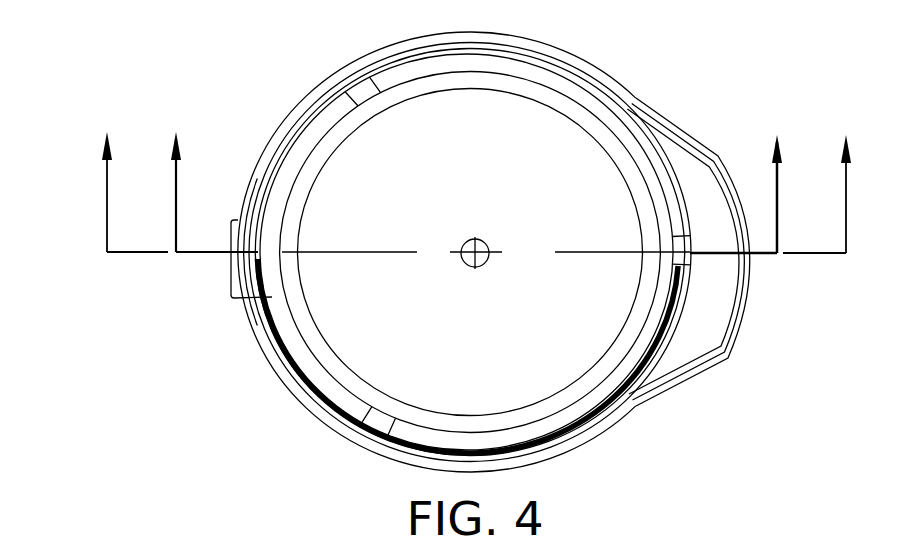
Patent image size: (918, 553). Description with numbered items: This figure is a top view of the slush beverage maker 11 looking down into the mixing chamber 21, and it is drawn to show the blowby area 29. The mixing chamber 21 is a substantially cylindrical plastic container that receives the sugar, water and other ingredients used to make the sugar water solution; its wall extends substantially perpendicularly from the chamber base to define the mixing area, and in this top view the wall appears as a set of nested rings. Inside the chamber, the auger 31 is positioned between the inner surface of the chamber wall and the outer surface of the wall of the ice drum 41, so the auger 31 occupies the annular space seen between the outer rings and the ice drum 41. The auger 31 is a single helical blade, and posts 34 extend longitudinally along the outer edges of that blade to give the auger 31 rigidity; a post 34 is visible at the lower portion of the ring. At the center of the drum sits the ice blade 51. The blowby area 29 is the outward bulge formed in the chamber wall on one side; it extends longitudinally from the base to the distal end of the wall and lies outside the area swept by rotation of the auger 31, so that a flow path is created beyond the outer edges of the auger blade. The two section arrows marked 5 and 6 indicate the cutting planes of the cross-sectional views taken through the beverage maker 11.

The section line 5- 5 is at (475, 192).
The section line 6- 6 is at (474, 192).
The slush beverage maker 11 is at (150, 432).
The mixing chamber 21 is at (282, 136).
The blowby area 29 is at (696, 317).
The auger 31 is at (687, 122).
The posts 34 is at (333, 410).
The ice drum 41 is at (243, 300).
The ice blade 51 is at (477, 246).